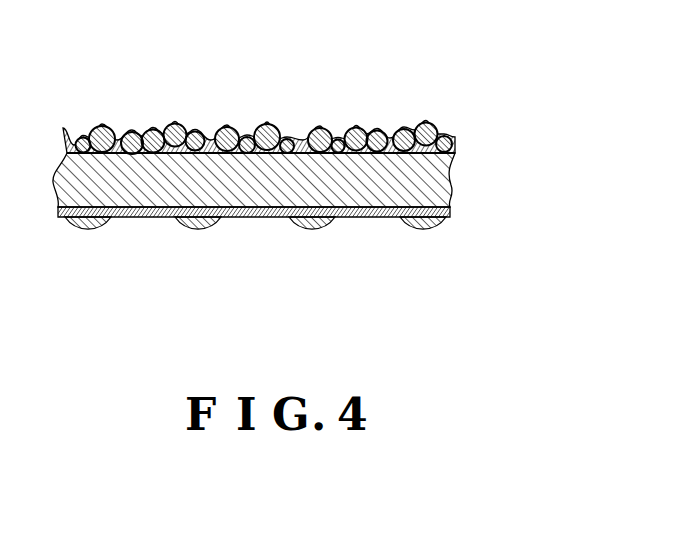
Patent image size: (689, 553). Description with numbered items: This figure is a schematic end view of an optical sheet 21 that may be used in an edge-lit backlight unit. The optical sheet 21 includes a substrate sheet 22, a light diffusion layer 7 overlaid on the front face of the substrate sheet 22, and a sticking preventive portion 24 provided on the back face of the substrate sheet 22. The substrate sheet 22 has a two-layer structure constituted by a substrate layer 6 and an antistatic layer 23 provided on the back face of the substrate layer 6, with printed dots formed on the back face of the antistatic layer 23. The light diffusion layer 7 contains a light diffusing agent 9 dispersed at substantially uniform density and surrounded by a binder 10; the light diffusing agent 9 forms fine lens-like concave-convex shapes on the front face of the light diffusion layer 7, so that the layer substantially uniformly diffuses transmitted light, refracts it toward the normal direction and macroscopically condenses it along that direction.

The optical sheet 21 is at (314, 165).
The light diffusion layer 7 is at (263, 103).
The light diffusing agent 9 is at (163, 131).
The binder 10 is at (303, 136).
The substrate sheet 22 is at (314, 190).
The substrate layer 6 is at (445, 177).
The antistatic layer 23 is at (290, 208).
The sticking preventive portion 24 is at (428, 235).